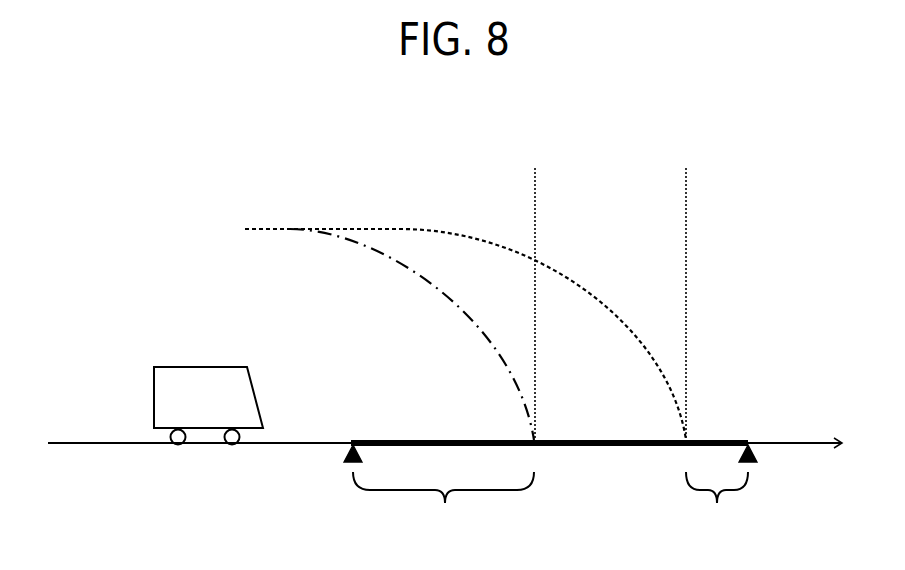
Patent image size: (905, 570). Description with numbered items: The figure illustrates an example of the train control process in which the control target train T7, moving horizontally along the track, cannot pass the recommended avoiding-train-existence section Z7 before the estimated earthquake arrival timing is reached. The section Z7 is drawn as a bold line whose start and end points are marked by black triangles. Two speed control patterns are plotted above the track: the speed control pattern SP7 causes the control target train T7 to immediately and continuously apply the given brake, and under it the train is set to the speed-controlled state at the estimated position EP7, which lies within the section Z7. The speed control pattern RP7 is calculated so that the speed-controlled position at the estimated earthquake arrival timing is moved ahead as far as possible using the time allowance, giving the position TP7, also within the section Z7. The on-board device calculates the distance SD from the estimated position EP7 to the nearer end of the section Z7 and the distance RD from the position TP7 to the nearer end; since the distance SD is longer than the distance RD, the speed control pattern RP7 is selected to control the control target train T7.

The control target train T7 is at (171, 373).
The speed control pattern SP7 is at (412, 334).
The speed control pattern RP7 is at (465, 334).
The estimated position EP7 is at (535, 292).
The position TP7 is at (687, 292).
The recommended avoiding-train-existence section Z7 is at (550, 437).
The distance SD is at (443, 501).
The distance RD is at (717, 501).